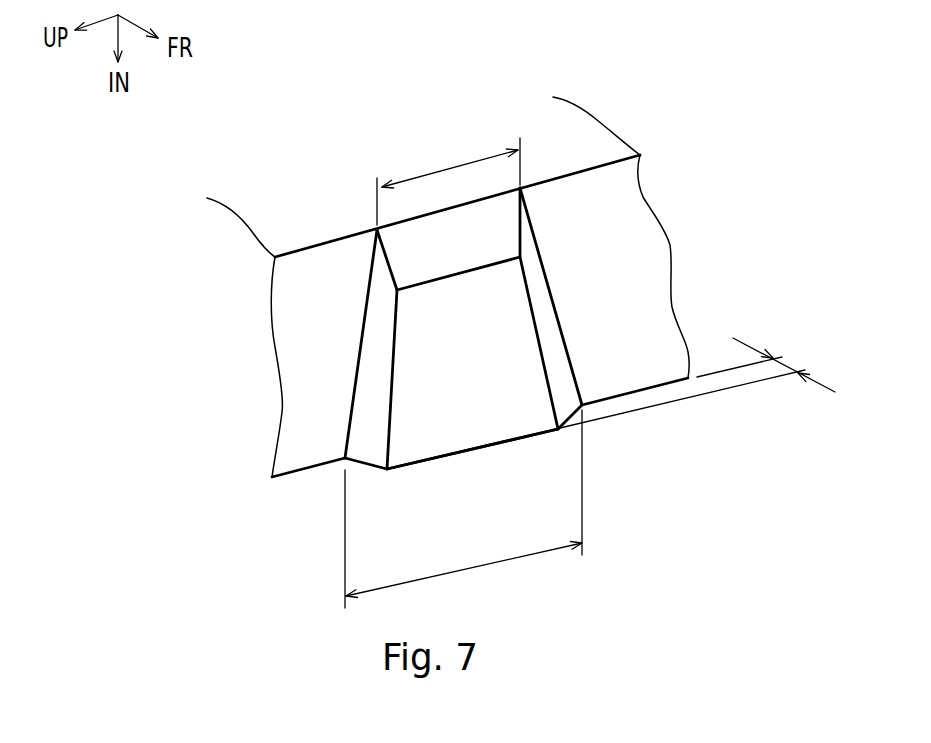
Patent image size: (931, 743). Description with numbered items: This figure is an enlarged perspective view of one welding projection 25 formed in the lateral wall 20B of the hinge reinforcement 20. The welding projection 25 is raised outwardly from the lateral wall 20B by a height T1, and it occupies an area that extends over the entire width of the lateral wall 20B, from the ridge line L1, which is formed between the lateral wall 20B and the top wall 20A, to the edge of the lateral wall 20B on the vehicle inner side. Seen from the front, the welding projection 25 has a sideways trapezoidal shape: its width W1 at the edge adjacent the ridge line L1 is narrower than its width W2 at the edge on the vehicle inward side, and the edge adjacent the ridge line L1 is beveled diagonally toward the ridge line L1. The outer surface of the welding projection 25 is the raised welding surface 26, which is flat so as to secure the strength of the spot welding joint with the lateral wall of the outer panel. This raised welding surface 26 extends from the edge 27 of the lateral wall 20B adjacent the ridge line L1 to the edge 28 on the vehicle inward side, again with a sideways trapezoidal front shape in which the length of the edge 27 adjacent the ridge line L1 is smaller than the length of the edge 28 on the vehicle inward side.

The hinge reinforcement 20 is at (363, 100).
The top wall 20A is at (580, 140).
The lateral wall 20B is at (642, 283).
The ridge line L1 is at (578, 175).
The welding projection 25 is at (490, 405).
The raised welding surface 26 is at (478, 375).
The edge adjacent the ridge line 27 is at (427, 287).
The edge on the vehicle inward side 28 is at (438, 462).
The width at the edge adjacent the ridge line W1 is at (448, 181).
The width at the edge on the vehicle inward side W2 is at (463, 509).
The height T1 is at (697, 382).